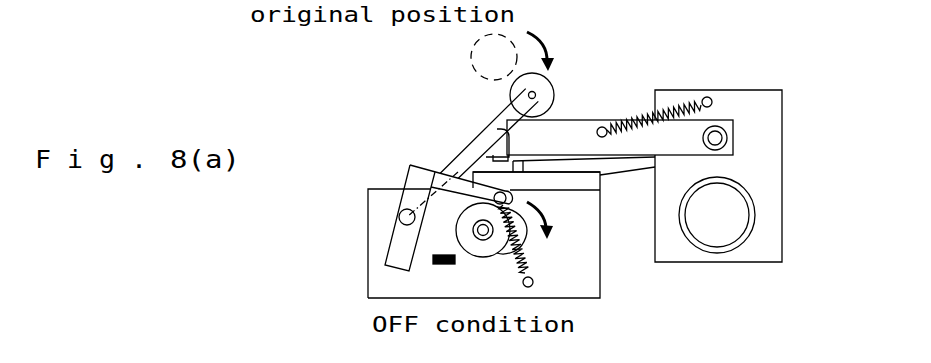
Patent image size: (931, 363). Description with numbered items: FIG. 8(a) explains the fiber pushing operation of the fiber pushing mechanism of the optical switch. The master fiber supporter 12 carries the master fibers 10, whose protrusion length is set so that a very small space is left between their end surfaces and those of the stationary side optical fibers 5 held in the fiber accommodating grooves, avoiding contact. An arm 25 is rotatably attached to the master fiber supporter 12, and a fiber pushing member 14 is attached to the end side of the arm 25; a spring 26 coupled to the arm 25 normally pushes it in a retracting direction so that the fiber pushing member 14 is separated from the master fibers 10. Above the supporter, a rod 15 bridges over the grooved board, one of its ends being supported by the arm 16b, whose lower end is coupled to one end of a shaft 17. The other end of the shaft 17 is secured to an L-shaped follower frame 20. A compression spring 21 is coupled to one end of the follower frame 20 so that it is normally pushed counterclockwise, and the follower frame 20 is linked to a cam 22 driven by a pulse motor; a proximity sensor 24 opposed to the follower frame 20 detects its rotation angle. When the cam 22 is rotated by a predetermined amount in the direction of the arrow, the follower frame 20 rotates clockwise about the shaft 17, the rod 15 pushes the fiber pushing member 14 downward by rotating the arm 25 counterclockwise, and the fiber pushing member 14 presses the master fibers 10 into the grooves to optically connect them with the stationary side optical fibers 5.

The stationary side optical fiber 5 is at (487, 150).
The master fiber 10 is at (630, 165).
The master fiber supporter 12 is at (770, 190).
The fiber pushing member 14 is at (472, 150).
The rod 15 is at (470, 63).
The arm 16b is at (462, 163).
The shaft 17 is at (399, 217).
The follower frame 20 is at (410, 183).
The compression spring 21 is at (533, 263).
The cam 22 is at (497, 248).
The proximity sensor 24 is at (433, 262).
The arm 25 is at (585, 128).
The spring 26 is at (638, 122).